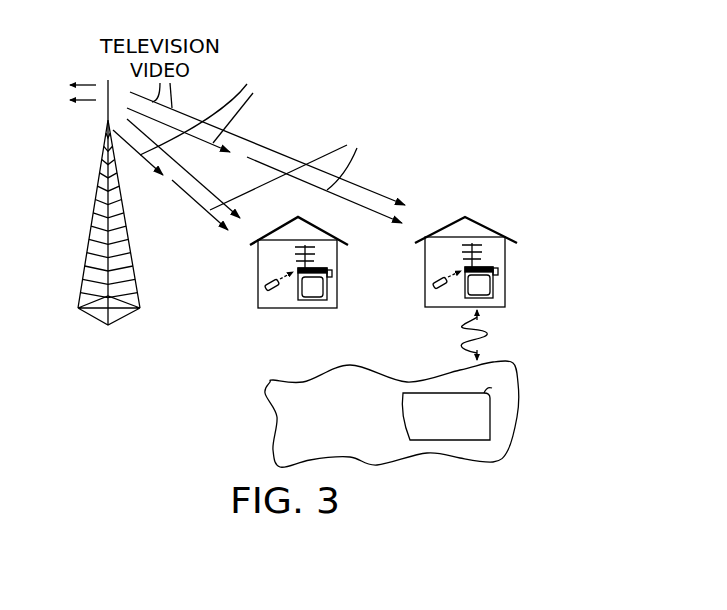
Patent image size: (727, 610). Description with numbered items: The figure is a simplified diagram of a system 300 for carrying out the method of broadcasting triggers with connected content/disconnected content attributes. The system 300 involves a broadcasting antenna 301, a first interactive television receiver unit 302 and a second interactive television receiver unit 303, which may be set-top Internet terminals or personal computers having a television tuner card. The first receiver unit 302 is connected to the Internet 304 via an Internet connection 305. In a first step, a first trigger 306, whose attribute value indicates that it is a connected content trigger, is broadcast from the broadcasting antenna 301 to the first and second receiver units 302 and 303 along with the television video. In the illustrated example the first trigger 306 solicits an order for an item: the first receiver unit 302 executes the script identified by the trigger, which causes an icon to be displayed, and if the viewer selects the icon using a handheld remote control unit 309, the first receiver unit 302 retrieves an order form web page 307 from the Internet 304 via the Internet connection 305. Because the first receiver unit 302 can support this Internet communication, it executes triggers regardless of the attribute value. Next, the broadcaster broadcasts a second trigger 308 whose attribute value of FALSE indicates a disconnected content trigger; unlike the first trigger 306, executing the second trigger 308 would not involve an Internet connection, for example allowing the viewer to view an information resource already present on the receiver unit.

The system 300 is at (533, 48).
The broadcasting antenna 301 is at (107, 106).
The first interactive television receiver unit 302 is at (461, 262).
The second interactive television receiver unit 303 is at (327, 288).
The Internet 304 is at (362, 434).
The Internet connection 305 is at (478, 336).
The first trigger 306 is at (400, 161).
The order form web page 307 is at (497, 388).
The second trigger 308 is at (313, 96).
The handheld remote control unit 309 is at (425, 279).